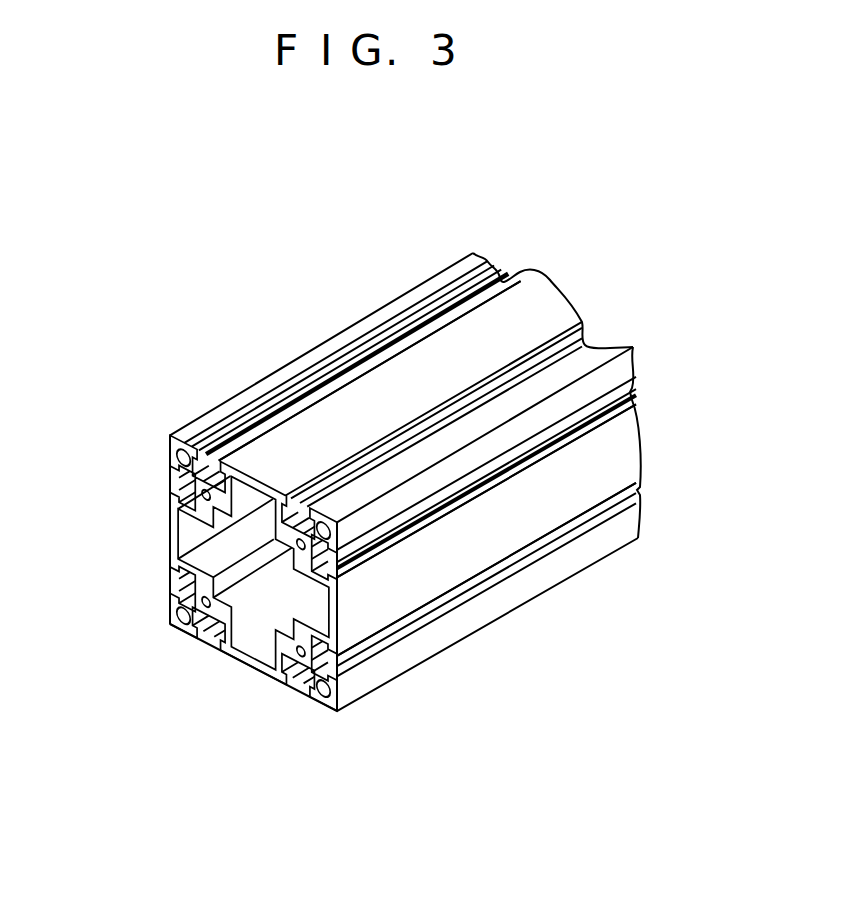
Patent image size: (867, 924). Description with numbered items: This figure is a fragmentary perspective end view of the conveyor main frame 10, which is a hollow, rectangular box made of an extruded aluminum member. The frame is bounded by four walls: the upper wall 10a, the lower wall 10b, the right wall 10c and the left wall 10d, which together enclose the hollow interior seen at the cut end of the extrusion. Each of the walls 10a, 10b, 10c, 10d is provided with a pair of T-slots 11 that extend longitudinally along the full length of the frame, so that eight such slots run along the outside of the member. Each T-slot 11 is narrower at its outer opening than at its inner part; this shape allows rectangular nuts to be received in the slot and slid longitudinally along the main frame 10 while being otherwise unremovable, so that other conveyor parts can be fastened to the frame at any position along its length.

The main frame 10 is at (400, 476).
The upper wall 10a is at (360, 407).
The lower wall 10b is at (247, 672).
The right wall 10c is at (165, 535).
The left wall 10d is at (527, 528).
The T-slots 11 is at (502, 268).